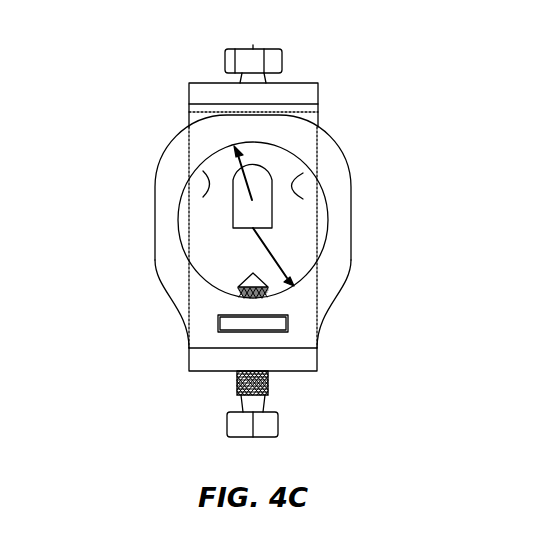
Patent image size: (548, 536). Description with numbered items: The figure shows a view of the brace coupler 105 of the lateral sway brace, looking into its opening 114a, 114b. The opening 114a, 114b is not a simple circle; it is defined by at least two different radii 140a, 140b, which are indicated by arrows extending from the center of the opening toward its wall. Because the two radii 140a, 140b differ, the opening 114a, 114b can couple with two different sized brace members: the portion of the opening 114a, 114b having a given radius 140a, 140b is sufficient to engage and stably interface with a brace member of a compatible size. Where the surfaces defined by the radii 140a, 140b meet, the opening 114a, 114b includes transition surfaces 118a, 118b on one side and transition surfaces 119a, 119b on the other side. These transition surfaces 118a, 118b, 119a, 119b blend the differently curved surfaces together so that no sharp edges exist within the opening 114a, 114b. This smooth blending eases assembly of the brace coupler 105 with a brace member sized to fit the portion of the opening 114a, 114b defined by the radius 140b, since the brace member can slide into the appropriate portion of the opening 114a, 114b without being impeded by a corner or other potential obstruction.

The brace coupler 105 is at (168, 51).
The opening 114a is at (185, 227).
The opening 114b is at (215, 253).
The transition surface 118a is at (117, 191).
The transition surface 118b is at (205, 194).
The transition surface 119a is at (395, 187).
The transition surface 119b is at (303, 199).
The radius 140a is at (267, 247).
The radius 140b is at (245, 180).